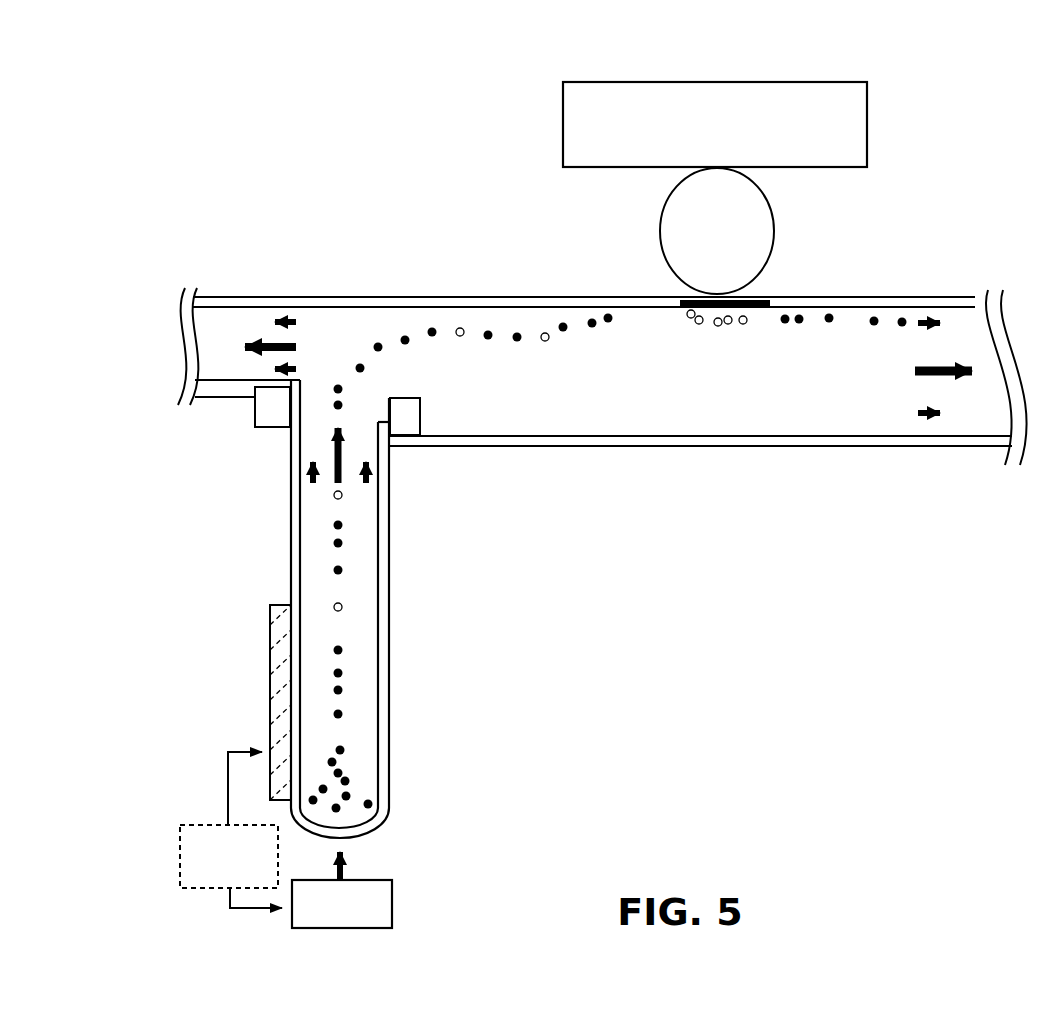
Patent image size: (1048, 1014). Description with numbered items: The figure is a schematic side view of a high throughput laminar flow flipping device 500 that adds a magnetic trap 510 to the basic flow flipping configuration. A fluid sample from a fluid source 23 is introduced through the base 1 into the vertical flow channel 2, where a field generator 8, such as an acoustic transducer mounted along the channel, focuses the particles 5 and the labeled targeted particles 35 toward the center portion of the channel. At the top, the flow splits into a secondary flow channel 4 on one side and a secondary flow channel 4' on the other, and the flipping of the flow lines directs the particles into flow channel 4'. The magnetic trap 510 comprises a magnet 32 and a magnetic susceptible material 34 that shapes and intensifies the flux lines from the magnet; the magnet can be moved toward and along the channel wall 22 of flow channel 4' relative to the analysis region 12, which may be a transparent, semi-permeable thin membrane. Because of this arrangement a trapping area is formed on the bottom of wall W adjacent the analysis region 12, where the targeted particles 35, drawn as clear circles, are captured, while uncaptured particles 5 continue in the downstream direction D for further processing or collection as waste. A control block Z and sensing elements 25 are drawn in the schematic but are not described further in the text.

The device 500 is at (584, 467).
The magnetic trap 510 is at (649, 176).
The magnet 32 is at (715, 124).
The magnetic susceptible material 34 is at (717, 231).
The analysis region 12 is at (676, 299).
The secondary flow channel 4 is at (576, 314).
The secondary flow channel 4' is at (708, 330).
The sensor 25 is at (270, 408).
The flow channel 2 is at (377, 592).
The channel wall 22 is at (304, 625).
The field generator 8 is at (270, 708).
The particles 5 is at (354, 712).
The targeted particles 35 is at (354, 605).
The base 1 is at (380, 810).
The fluid source 23 is at (342, 890).
The controller Z is at (231, 830).
The wall W is at (673, 317).
The downstream direction D is at (930, 372).